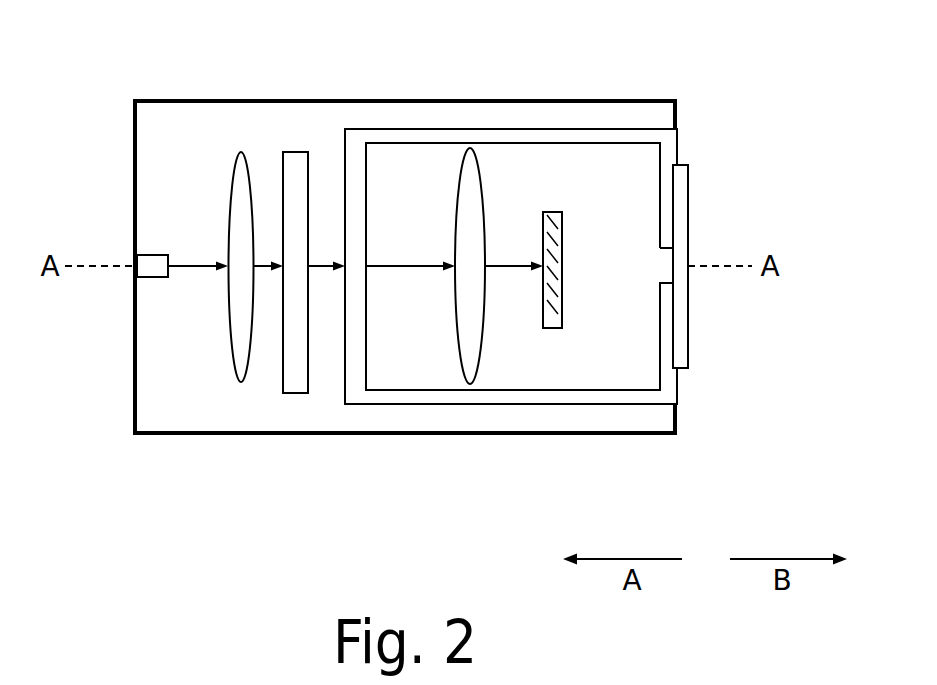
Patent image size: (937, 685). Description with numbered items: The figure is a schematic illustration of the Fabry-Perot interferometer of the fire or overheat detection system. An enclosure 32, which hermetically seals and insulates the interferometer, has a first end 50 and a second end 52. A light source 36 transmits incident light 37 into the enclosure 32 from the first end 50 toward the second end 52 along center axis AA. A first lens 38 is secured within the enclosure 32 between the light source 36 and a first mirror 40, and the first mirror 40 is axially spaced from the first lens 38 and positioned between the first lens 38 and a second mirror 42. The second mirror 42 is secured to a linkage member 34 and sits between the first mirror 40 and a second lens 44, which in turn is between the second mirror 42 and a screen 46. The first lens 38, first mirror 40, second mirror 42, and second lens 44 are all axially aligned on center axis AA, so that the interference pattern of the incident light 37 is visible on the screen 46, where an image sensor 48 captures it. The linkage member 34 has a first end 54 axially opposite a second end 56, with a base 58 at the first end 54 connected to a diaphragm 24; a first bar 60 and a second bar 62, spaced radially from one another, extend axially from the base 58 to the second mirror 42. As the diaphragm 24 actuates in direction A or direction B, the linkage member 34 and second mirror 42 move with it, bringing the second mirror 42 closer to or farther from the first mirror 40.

The diaphragm 24 is at (680, 208).
The enclosure 32 is at (168, 433).
The linkage member 34 is at (600, 137).
The light source 36 is at (155, 282).
The incident light 37 is at (187, 268).
The first lens 38 is at (230, 183).
The first mirror 40 is at (297, 152).
The second mirror 42 is at (368, 164).
The second lens 44 is at (470, 148).
The screen 46 is at (545, 302).
The image sensor 48 is at (563, 274).
The first end 50 is at (134, 375).
The second end 52 is at (677, 388).
The first end 54 is at (685, 138).
The second end 56 is at (345, 129).
The base 58 is at (664, 198).
The first bar 60 is at (537, 137).
The second bar 62 is at (588, 395).